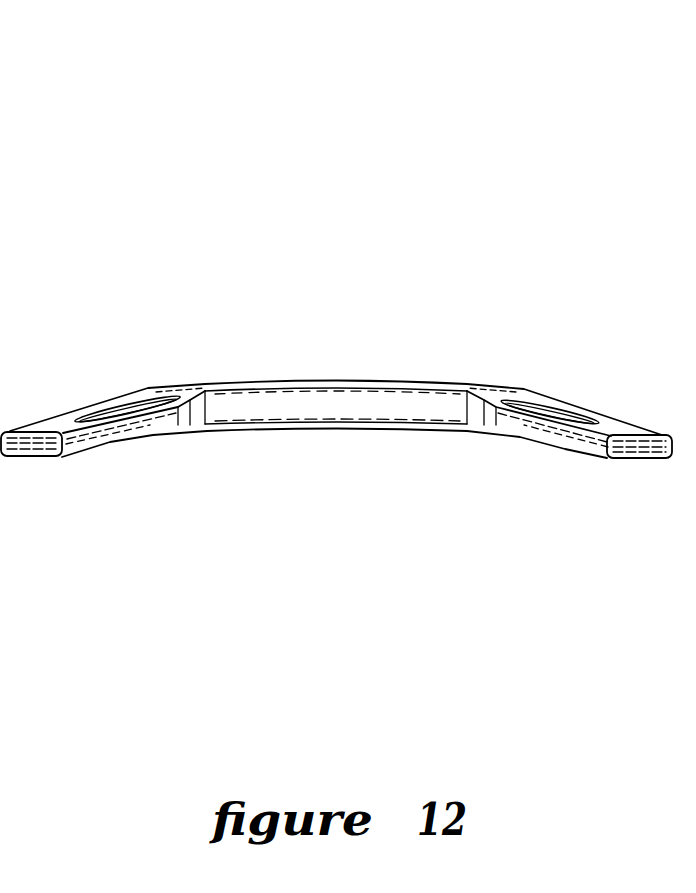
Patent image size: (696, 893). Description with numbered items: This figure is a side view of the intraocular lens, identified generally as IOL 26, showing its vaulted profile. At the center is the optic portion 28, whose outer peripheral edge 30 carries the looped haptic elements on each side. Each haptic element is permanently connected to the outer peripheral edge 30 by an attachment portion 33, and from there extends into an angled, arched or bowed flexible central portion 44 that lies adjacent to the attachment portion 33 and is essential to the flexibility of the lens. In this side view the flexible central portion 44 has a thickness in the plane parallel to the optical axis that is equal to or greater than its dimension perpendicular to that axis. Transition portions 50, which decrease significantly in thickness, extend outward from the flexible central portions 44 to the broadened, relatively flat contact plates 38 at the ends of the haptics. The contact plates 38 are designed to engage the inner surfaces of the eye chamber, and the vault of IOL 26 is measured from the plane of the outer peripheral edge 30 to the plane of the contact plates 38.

The IOL 26 is at (451, 318).
The optic portion 28 is at (338, 383).
The outer peripheral edge 30 is at (337, 403).
The attachment portions 33 is at (203, 412).
The contact plate 38 is at (60, 426).
The flexible central portion 44 is at (153, 420).
The transition portions 50 is at (110, 433).